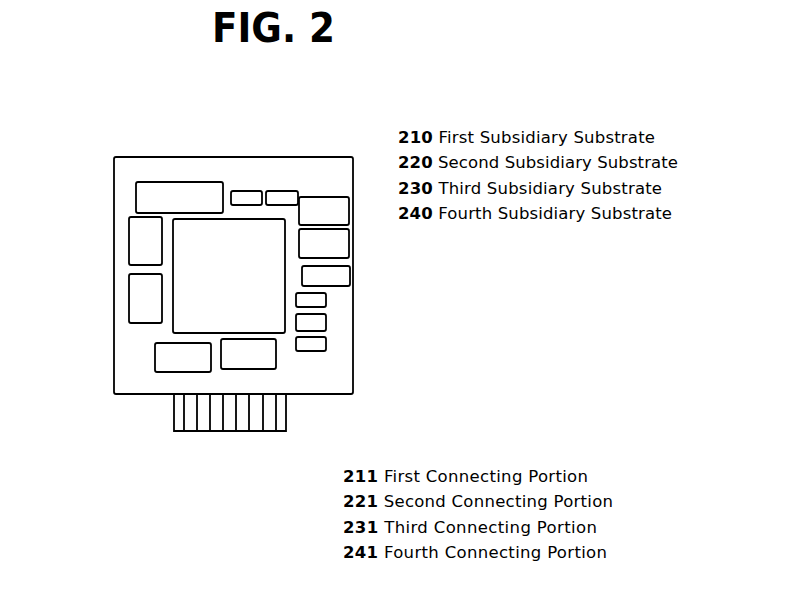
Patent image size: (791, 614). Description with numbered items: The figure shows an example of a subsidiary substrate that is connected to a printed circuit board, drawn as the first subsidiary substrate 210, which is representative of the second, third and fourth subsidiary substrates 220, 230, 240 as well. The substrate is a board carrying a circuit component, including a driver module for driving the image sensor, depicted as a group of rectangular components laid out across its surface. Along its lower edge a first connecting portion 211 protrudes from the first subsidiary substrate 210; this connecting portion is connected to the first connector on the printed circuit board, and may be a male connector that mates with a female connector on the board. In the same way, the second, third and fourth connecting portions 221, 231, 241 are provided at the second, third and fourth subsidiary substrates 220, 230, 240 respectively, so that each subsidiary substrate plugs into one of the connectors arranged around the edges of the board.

The first subsidiary substrate 210 is at (332, 172).
The second subsidiary substrate 220 is at (233, 275).
The third subsidiary substrate 230 is at (233, 275).
The fourth subsidiary substrate 240 is at (233, 275).
The first connecting portion 211 is at (280, 420).
The second connecting portion 221 is at (230, 412).
The third connecting portion 231 is at (230, 412).
The fourth connecting portion 241 is at (230, 412).